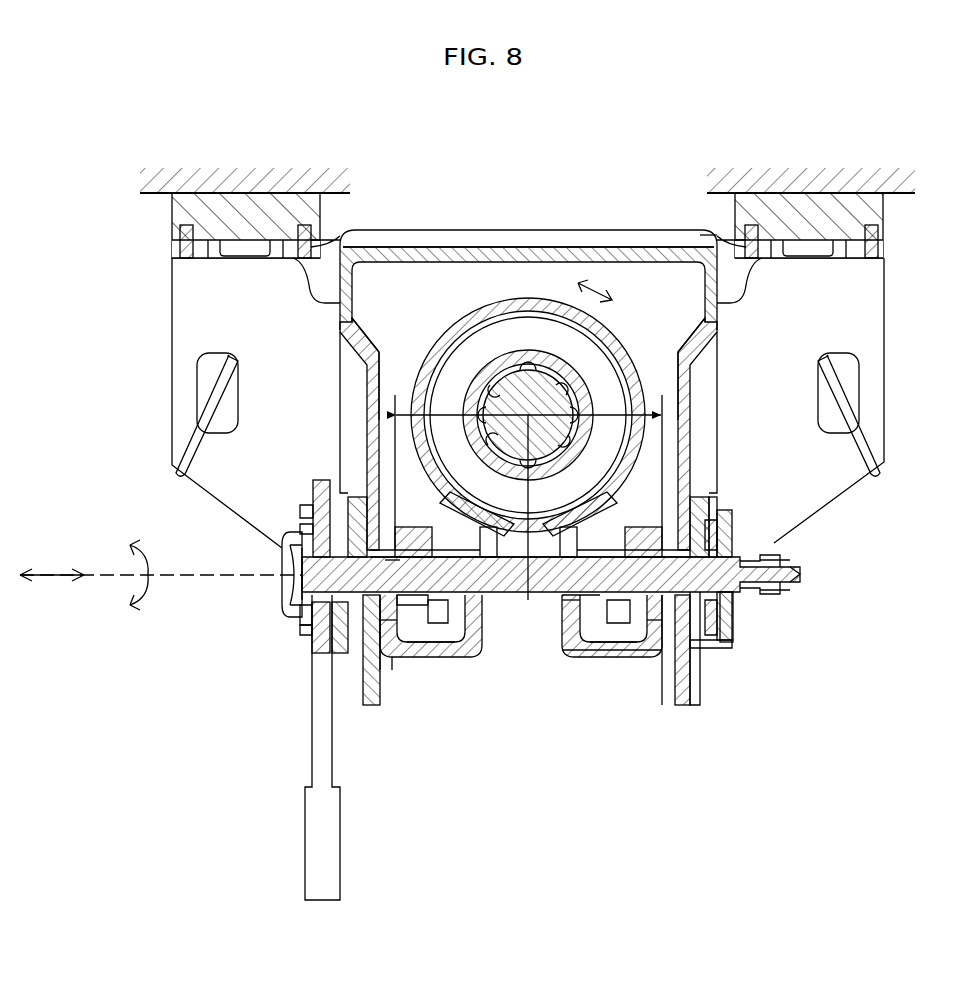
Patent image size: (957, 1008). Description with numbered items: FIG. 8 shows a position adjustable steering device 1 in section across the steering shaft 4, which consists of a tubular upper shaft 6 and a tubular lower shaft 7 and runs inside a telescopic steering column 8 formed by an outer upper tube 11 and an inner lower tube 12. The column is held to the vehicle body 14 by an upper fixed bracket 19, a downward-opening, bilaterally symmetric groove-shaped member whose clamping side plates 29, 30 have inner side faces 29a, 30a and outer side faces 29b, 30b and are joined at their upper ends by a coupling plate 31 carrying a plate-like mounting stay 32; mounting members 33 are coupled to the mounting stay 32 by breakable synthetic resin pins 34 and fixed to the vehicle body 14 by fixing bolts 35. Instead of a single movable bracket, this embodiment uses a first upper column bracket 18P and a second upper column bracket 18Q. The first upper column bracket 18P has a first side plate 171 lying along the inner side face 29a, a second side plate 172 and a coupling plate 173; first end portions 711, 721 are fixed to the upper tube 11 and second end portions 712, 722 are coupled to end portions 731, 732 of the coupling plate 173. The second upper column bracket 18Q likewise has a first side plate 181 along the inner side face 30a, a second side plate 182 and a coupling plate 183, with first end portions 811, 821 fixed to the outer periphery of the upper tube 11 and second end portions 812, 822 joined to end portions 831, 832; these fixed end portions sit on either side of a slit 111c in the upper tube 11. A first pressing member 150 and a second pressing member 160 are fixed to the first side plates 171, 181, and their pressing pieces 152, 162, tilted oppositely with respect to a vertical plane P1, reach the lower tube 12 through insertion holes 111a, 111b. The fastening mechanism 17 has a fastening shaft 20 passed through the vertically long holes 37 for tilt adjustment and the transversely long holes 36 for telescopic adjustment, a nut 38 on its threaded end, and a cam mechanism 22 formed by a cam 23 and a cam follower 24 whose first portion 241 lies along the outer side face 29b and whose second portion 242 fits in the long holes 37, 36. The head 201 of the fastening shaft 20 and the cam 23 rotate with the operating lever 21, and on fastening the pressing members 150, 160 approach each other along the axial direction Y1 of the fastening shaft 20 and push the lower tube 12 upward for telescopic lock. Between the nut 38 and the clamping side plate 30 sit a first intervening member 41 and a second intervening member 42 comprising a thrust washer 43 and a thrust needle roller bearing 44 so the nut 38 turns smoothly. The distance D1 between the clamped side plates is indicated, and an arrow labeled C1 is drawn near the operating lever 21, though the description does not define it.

The position adjustable steering device 1 is at (598, 212).
The steering shaft 4 is at (528, 344).
The upper shaft 6 is at (526, 310).
The lower shaft 7 is at (560, 320).
The steering column 8 is at (492, 314).
The upper tube 11 is at (464, 350).
The lower tube 12 is at (440, 380).
The vehicle body 14 is at (248, 180).
The fastening mechanism 17 is at (280, 604).
The upper fixed bracket 19 is at (630, 243).
The fastening shaft 20 is at (532, 600).
The operating lever 21 is at (313, 765).
The cam mechanism 22 is at (282, 659).
The cam 23 is at (299, 648).
The cam follower 24 is at (250, 697).
The clamping side plate 29 is at (367, 384).
The inner side face of clamping side plate 29a is at (384, 360).
The outer side face of clamping side plate 29b is at (362, 340).
The clamping side plate 30 is at (690, 382).
The inner side face of clamping side plate 30a is at (676, 345).
The outer side face of clamping side plate 30b is at (695, 340).
The coupling plate 31 is at (495, 255).
The mounting stay 32 is at (700, 236).
The mounting member 33 is at (180, 212).
The synthetic resin pin 34 is at (180, 248).
The fixing bolt 35 is at (245, 252).
The transversely long hole 36 is at (690, 660).
The vertically long hole 37 is at (300, 528).
The nut 38 is at (752, 592).
The first intervening member 41 is at (702, 648).
The second intervening member 42 is at (813, 569).
The thrust washer 43 is at (732, 525).
The thrust needle roller bearing 44 is at (732, 548).
The insertion hole 111a is at (400, 490).
The insertion hole 111b is at (660, 490).
The slit 111c is at (525, 600).
The first pressing member 150 is at (448, 660).
The pressing piece 152 is at (400, 527).
The second pressing member 160 is at (622, 658).
The pressing piece 162 is at (700, 505).
The first side plate 171 is at (355, 500).
The second side plate 172 is at (486, 620).
The coupling plate 173 is at (430, 655).
The first side plate 181 is at (650, 527).
The second side plate 182 is at (566, 640).
The coupling plate 183 is at (626, 650).
The head 201 is at (298, 593).
The first portion of cam follower 241 is at (300, 630).
The second portion of cam follower 242 is at (302, 615).
The first end portion 711 is at (440, 470).
The second end portion 712 is at (363, 640).
The first end portion 721 is at (313, 500).
The second end portion 722 is at (500, 640).
The end portion of coupling plate 731 is at (372, 665).
The end portion of coupling plate 732 is at (460, 640).
The first end portion 811 is at (640, 470).
The second end portion 812 is at (690, 660).
The first end portion 821 is at (717, 520).
The second end portion 822 is at (575, 610).
The end portion of coupling plate 831 is at (685, 705).
The end portion of coupling plate 832 is at (610, 650).
The first upper column bracket 18P is at (385, 660).
The second upper column bracket 18Q is at (662, 660).
The vertical plane P1 is at (520, 400).
The distance between clamped side plates D1 is at (632, 400).
The central axis of clamp shaft C1 is at (120, 565).
The axial direction of fastening shaft Y1 is at (58, 578).